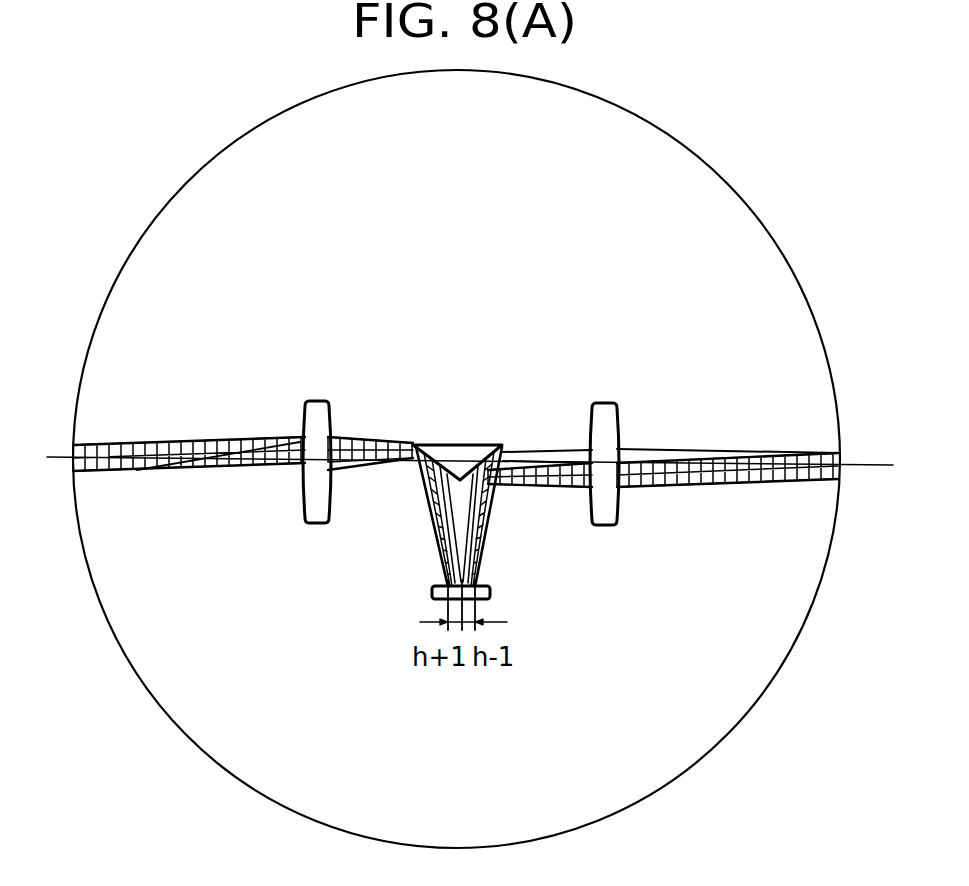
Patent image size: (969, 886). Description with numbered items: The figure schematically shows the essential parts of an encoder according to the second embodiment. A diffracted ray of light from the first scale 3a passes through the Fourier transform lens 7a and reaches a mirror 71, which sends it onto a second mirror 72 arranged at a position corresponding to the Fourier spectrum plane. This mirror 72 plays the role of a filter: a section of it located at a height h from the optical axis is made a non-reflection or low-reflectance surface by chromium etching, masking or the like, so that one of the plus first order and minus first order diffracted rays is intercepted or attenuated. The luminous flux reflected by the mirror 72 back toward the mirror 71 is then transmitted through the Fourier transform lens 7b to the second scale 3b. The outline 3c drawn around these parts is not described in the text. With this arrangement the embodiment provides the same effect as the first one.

The first scale 3a is at (66, 470).
The second scale 3b is at (850, 476).
The drum wall 3c is at (777, 242).
The Fourier transform lens 7a is at (320, 440).
The Fourier transform lens 7b is at (606, 443).
The mirror 71 is at (475, 446).
The mirror 72 is at (432, 592).